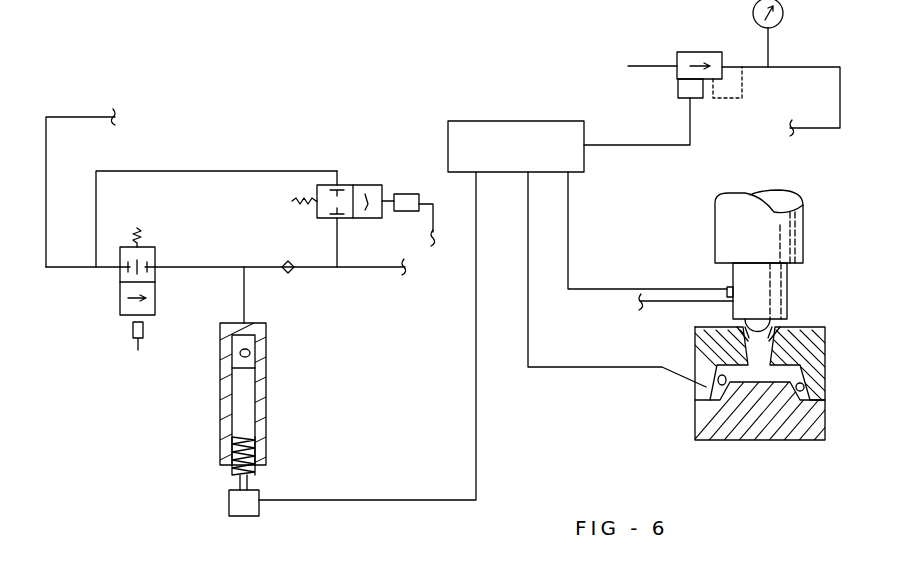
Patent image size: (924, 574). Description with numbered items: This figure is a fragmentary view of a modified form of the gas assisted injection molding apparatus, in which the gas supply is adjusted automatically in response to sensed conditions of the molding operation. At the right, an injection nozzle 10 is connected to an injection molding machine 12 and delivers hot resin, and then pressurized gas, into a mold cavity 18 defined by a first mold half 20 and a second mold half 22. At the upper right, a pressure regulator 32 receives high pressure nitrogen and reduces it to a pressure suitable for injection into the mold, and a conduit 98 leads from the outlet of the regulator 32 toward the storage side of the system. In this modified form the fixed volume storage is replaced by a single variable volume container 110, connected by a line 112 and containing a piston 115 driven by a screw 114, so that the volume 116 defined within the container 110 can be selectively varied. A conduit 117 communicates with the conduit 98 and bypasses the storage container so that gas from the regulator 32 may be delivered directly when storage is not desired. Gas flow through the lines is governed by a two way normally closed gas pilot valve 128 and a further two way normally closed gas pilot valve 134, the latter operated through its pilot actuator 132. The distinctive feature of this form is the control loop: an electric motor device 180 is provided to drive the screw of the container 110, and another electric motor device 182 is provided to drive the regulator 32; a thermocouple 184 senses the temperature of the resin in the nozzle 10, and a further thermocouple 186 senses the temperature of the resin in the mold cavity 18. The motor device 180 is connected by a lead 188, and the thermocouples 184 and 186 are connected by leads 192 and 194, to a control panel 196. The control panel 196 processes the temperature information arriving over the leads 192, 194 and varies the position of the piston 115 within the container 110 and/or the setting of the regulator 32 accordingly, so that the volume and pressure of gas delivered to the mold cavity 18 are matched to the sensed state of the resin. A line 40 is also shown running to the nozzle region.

The injection nozzle 10 is at (793, 304).
The injection molding machine 12 is at (803, 240).
The mold cavity 18 is at (804, 387).
The first mold half 20 is at (825, 357).
The second mold half 22 is at (826, 422).
The pressure regulator 32 is at (703, 49).
The line 40 is at (690, 303).
The conduit 98 is at (86, 117).
The variable volume container 110 is at (247, 402).
The line 112 is at (246, 300).
The screw 114 is at (257, 476).
The piston 115 is at (257, 405).
The volume 116 is at (250, 356).
The conduit 117 is at (210, 171).
The two way normally closed gas pilot valve 128 is at (163, 256).
The pilot actuator 132 is at (405, 193).
The two way normally closed gas pilot valve 134 is at (362, 180).
The electric motor device 180 is at (226, 503).
The electric motor device 182 is at (678, 86).
The thermocouple 184 is at (727, 290).
The thermocouple 186 is at (712, 394).
The lead 188 is at (476, 410).
The lead 192 is at (568, 250).
The lead 194 is at (528, 315).
The control panel 196 is at (516, 146).